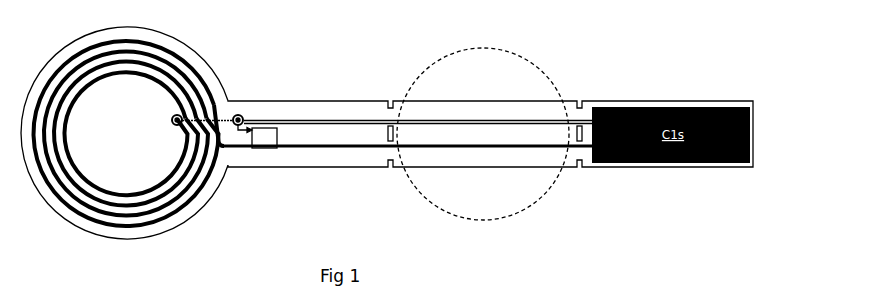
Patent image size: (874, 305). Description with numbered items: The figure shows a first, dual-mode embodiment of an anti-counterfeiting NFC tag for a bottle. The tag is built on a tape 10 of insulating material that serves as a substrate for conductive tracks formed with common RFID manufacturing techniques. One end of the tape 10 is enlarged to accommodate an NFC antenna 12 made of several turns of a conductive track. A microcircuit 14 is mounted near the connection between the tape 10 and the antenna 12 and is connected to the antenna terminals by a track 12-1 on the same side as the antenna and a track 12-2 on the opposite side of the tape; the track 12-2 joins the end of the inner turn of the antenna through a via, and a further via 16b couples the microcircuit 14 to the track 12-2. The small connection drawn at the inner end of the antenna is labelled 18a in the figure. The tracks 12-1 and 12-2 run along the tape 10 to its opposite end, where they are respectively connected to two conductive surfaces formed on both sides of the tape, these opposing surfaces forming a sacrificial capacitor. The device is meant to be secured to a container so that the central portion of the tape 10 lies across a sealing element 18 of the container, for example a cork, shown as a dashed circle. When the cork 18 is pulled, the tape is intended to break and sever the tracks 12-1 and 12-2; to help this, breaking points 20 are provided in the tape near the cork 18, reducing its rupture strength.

The tape 10 is at (310, 105).
The NFC antenna 12 is at (142, 43).
The track 12-1 is at (320, 147).
The track 12-2 is at (359, 124).
The microcircuit 14 is at (261, 128).
The via 16b is at (239, 114).
The inner terminal 18a is at (173, 126).
The sealing element 18 is at (511, 214).
The breaking points 20 is at (389, 169).